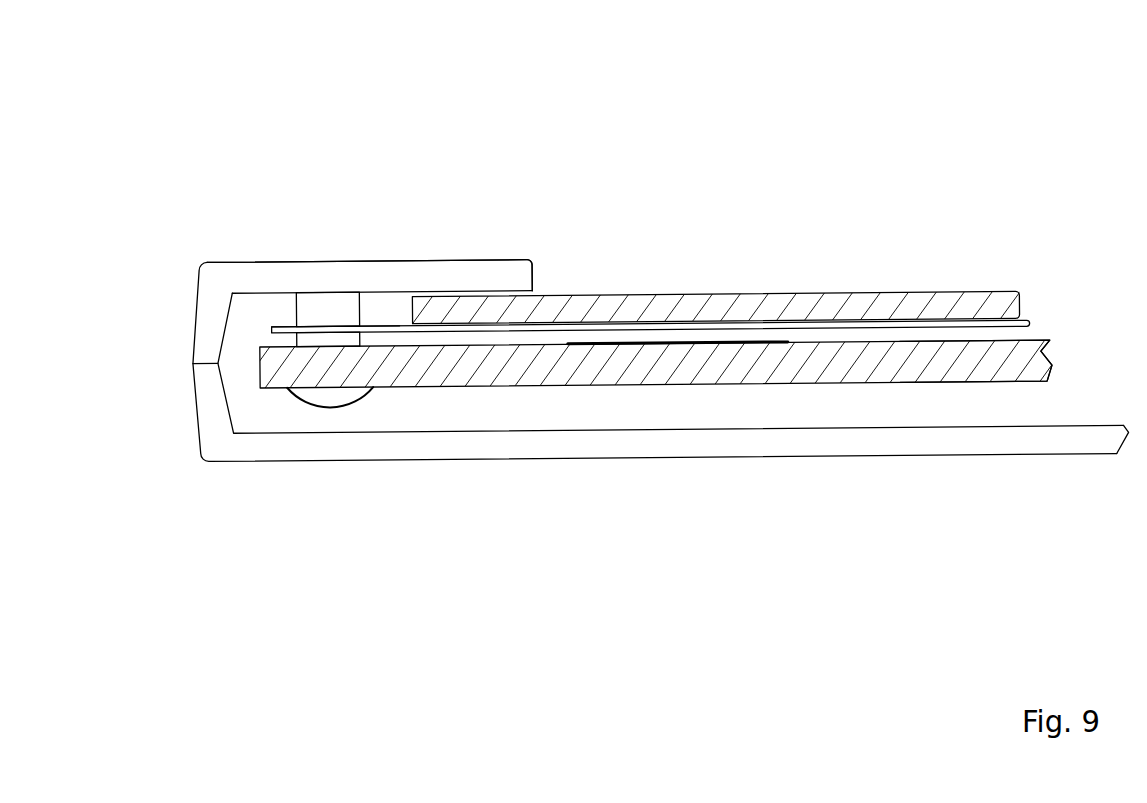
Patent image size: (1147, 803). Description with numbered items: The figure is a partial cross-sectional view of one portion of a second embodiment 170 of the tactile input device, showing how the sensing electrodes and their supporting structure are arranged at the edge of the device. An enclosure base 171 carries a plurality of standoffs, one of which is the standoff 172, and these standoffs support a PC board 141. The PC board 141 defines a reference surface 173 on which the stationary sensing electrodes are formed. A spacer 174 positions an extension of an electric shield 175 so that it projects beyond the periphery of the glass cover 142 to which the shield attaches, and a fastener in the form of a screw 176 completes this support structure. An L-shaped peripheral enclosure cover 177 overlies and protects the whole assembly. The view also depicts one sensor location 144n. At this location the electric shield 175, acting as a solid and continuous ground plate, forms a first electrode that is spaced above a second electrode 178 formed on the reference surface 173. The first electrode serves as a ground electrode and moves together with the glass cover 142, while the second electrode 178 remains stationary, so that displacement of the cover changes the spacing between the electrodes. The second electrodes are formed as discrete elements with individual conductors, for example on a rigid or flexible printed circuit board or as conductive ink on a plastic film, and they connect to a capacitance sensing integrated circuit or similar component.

The second embodiment of the tactile input device 170 is at (729, 185).
The sensor location 144n is at (810, 242).
The standoff 172 is at (332, 303).
The electric shield 175 is at (372, 328).
The L-shaped peripheral enclosure cover 177 is at (481, 274).
The glass cover 142 is at (915, 292).
The spacer 174 is at (270, 331).
The screw 176 is at (343, 410).
The PC board 141 is at (560, 387).
The second electrode 178 is at (717, 335).
The enclosure base 171 is at (822, 448).
The reference surface 173 is at (950, 342).